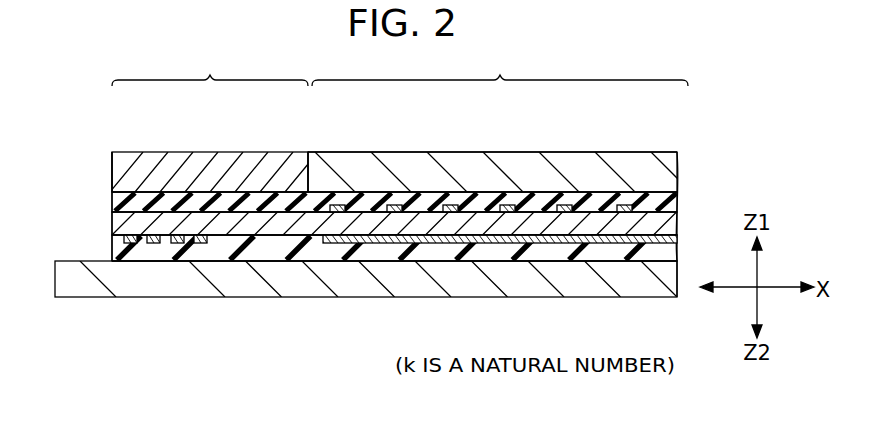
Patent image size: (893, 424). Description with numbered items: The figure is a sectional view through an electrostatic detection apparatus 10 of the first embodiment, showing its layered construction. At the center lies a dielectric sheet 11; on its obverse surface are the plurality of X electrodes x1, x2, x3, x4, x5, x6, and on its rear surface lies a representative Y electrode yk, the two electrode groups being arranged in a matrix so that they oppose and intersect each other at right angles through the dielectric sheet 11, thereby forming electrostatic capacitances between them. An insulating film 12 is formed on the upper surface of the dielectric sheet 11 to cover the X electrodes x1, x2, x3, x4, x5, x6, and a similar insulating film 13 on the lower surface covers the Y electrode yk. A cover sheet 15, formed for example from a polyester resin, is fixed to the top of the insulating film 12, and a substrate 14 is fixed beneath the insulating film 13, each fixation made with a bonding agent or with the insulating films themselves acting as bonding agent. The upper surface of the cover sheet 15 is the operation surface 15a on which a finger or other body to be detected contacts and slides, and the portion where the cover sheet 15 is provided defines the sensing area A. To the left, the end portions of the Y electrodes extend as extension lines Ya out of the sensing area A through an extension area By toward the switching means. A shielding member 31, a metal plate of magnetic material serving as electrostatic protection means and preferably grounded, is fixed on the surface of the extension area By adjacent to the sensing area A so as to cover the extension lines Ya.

The electro-optical device 10 is at (102, 126).
The dielectric sheet 11 is at (112, 222).
The insulating film 12 is at (112, 198).
The insulating film 13 is at (112, 250).
The substrate 14 is at (86, 297).
The cover sheet 15 is at (670, 162).
The operation surface 15a is at (668, 150).
The shielding member 31 is at (197, 170).
The X electrode x1 is at (335, 205).
The X electrode x2 is at (392, 205).
The X electrode x3 is at (448, 205).
The X electrode x4 is at (505, 205).
The X electrode x5 is at (562, 205).
The X electrode x6 is at (623, 205).
The Y electrode yk is at (531, 243).
The extension line Ya is at (200, 243).
The extension area By is at (210, 68).
The sensing area A is at (500, 68).